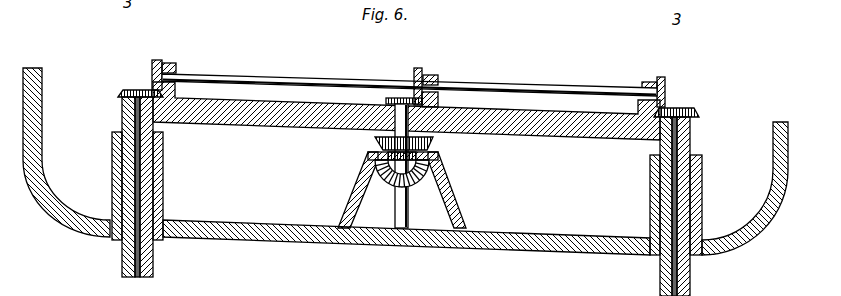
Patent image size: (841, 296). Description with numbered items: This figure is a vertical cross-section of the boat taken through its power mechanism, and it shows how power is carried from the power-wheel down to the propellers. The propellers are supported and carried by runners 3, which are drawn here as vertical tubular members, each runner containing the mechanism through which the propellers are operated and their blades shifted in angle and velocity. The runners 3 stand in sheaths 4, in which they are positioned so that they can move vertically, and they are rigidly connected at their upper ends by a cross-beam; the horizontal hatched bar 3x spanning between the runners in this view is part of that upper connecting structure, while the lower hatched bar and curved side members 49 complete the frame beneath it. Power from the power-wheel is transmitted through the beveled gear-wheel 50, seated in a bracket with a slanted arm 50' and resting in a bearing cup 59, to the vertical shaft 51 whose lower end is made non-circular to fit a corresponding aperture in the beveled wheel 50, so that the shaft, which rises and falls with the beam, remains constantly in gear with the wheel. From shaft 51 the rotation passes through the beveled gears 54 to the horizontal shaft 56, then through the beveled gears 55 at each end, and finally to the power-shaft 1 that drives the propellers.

The power-shaft 1 is at (127, 295).
The runners 3 is at (120, 267).
The cross bar 3x is at (298, 126).
The sheaths 4 is at (117, 138).
The frame bar 49 is at (45, 62).
The beveled gear-wheel 50 is at (408, 190).
The bracket arm 50' is at (351, 169).
The shaft 51 is at (428, 140).
The beveled gears 54 is at (414, 76).
The beveled gears 55 is at (150, 91).
The shaft 56 is at (251, 79).
The bearing cup 59 is at (398, 177).